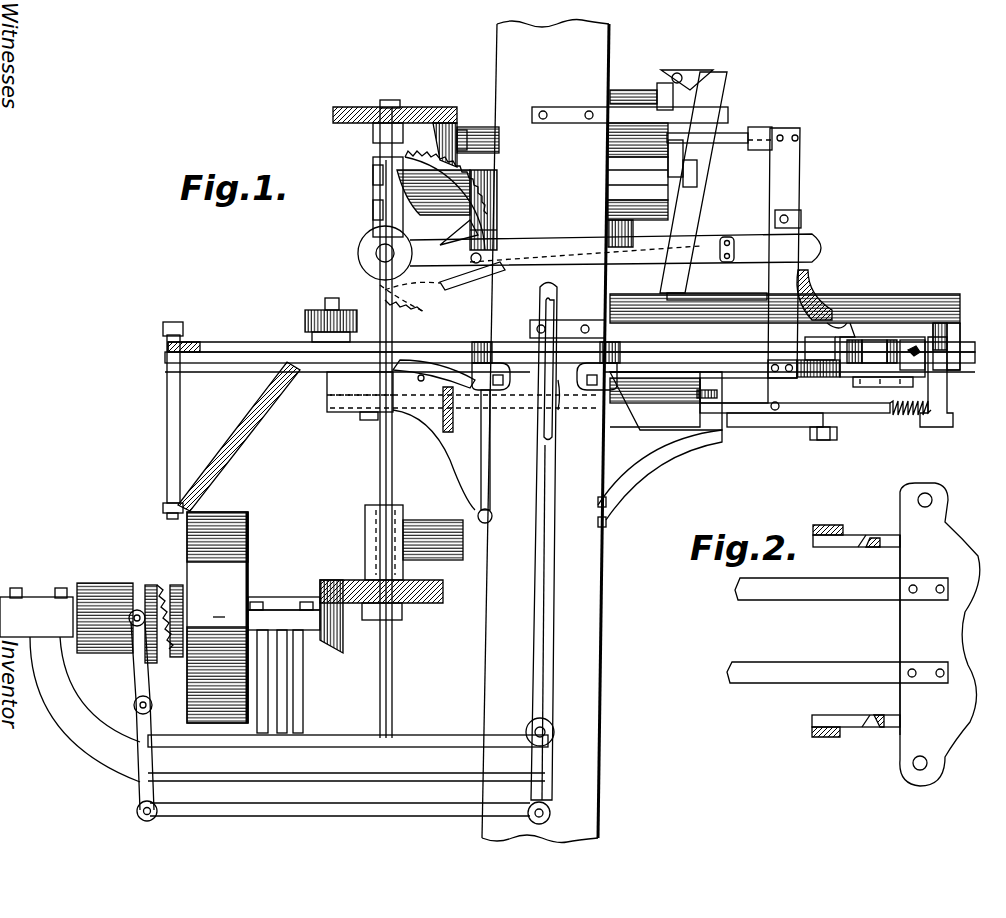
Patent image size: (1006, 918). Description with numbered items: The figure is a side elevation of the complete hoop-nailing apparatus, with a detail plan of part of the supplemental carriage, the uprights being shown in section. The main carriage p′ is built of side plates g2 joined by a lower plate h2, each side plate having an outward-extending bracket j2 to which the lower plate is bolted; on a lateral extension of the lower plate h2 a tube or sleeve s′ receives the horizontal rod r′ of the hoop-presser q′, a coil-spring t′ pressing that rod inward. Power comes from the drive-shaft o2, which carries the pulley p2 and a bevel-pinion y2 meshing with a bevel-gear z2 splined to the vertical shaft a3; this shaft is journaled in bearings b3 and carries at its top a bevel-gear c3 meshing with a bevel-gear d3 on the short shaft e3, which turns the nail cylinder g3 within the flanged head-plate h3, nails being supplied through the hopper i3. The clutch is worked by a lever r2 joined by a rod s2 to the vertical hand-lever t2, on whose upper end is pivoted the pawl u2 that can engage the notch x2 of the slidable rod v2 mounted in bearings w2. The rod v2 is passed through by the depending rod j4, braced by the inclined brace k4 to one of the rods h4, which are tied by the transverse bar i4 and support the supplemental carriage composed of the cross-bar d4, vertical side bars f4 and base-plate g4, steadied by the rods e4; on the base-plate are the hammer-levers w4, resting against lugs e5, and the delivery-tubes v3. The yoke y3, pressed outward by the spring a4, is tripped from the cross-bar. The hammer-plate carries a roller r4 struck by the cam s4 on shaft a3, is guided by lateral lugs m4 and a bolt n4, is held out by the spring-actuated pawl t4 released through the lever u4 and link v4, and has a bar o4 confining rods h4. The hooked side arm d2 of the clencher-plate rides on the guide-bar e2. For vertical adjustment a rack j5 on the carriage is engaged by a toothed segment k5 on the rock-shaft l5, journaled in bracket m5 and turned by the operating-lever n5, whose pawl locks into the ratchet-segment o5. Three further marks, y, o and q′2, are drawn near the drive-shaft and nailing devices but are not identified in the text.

In FIG. 1, the spring a4 is at (690, 112).
In FIG. 1, the yoke y3 is at (715, 120).
In FIG. 1, the flanged head-plate h3 is at (673, 80).
In FIG. 1, the hopper i3 is at (683, 60).
In FIG. 1, the cylinder g3 is at (626, 96).
In FIG. 1, the guide-bar e2 is at (755, 134).
In FIG. 1, the rod e4 is at (752, 143).
In FIG. 1, the upper cross-bar d4 is at (800, 130).
In FIG. 1, the vertical side bar f4 is at (790, 190).
In FIG. 2, the vertical side bar f4 is at (832, 524).
In FIG. 1, the rock-shaft l5 is at (376, 253).
In FIG. 1, the operating-lever n5 is at (540, 262).
In FIG. 1, the toothed segment k5 is at (395, 210).
In FIG. 1, the bracket m5 is at (365, 235).
In FIG. 1, the ratchet-segment o5 is at (395, 283).
In FIG. 1, the vertical shaft a3 is at (392, 640).
In FIG. 1, the bevel-gear c3 is at (356, 120).
In FIG. 1, the bevel-gear d3 is at (455, 120).
In FIG. 1, the short shaft e3 is at (470, 130).
In FIG. 1, the cam s4 is at (433, 231).
In FIG. 1, the bearing b3 is at (372, 182).
In FIG. 1, the rack j5 is at (492, 208).
In FIG. 1, the slidable rod v2 is at (240, 340).
In FIG. 1, the rod h4 is at (251, 363).
In FIG. 2, the rod h4 is at (775, 665).
In FIG. 1, the depending rod j4 is at (167, 395).
In FIG. 1, the inclined brace k4 is at (286, 405).
In FIG. 1, the roller r4 is at (310, 318).
In FIG. 1, the spring-actuated pawl t4 is at (382, 388).
In FIG. 1, the lateral lug m4 is at (440, 382).
In FIG. 1, the outward-extending bracket j2 is at (450, 428).
In FIG. 1, the link v4 is at (480, 476).
In FIG. 1, the lever u4 is at (492, 512).
In FIG. 1, the bearing w2 is at (485, 348).
In FIG. 1, the pawl or latch-lever u2 is at (556, 346).
In FIG. 1, the notch x2 is at (566, 392).
In FIG. 1, the vertical hand-lever t2 is at (552, 680).
In FIG. 1, the main carriage p′ is at (660, 468).
In FIG. 1, the side plate g2 is at (660, 430).
In FIG. 1, the side arm d2 is at (800, 322).
In FIG. 1, the delivery-tube v3 is at (800, 300).
In FIG. 1, the bar o4 is at (820, 345).
In FIG. 1, the hammer-lever w4 is at (886, 345).
In FIG. 1, the block y is at (935, 345).
In FIG. 1, the end block o is at (961, 326).
In FIG. 1, the hoop-presser q′ is at (946, 396).
In FIG. 1, the horizontal rod r′ is at (898, 410).
In FIG. 1, the coil-spring t′ is at (882, 414).
In FIG. 1, the tube or sleeve s′ is at (799, 437).
In FIG. 1, the bolt n4 is at (830, 440).
In FIG. 1, the base-plate g4 is at (850, 282).
In FIG. 2, the base-plate g4 is at (912, 700).
In FIG. 1, the lower plate h2 is at (760, 410).
In FIG. 1, the lug e5 is at (877, 322).
In FIG. 2, the lug e5 is at (870, 544).
In FIG. 1, the transverse bar i4 is at (720, 384).
In FIG. 1, the drive-shaft o2 is at (163, 583).
In FIG. 1, the crank link q′2 is at (134, 608).
In FIG. 1, the pulley p2 is at (248, 546).
In FIG. 1, the bevel-pinion y2 is at (316, 596).
In FIG. 1, the bevel-gear z2 is at (340, 578).
In FIG. 1, the lever r2 is at (348, 758).
In FIG. 1, the rod s2 is at (320, 805).